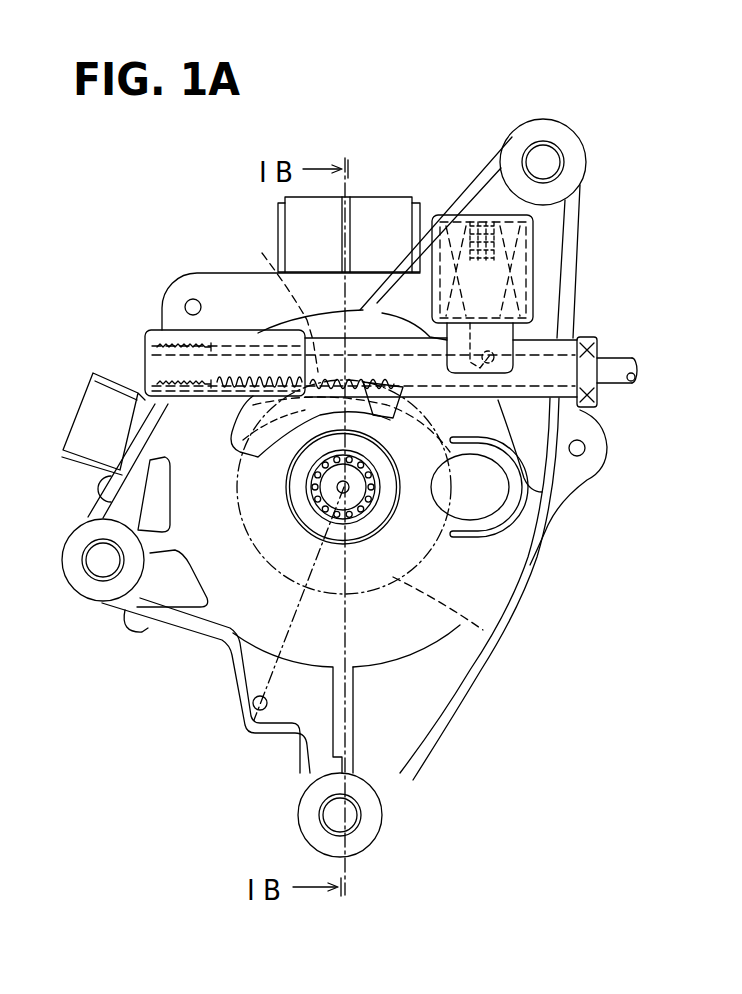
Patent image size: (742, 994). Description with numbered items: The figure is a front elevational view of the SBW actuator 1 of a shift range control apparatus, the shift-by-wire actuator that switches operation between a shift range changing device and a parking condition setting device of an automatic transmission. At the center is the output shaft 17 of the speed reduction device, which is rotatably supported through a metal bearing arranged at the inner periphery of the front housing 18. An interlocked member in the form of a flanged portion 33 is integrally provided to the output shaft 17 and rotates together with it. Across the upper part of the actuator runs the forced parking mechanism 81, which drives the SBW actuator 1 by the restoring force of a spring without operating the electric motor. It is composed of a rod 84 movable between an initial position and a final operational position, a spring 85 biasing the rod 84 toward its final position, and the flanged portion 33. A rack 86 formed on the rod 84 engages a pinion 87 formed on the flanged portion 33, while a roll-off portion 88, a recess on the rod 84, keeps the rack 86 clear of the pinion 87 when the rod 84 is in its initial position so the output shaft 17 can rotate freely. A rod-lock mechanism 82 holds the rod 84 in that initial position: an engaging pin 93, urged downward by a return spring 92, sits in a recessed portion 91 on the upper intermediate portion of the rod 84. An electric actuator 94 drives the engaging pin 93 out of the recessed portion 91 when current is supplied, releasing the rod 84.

The SBW actuator 1 is at (147, 239).
The output shaft 17 is at (373, 498).
The front housing 18 is at (220, 618).
The flanged portion 33 is at (512, 662).
The forced parking mechanism 81 is at (240, 330).
The rod-lock mechanism 82 is at (583, 456).
The rod 84 is at (618, 360).
The spring 85 is at (167, 348).
The rack 86 is at (232, 412).
The pinion 87 is at (432, 426).
The roll-off portion 88 is at (280, 297).
The recessed portion 91 is at (520, 338).
The return spring 92 is at (473, 217).
The engaging pin 93 is at (533, 312).
The electric actuator 94 is at (533, 243).